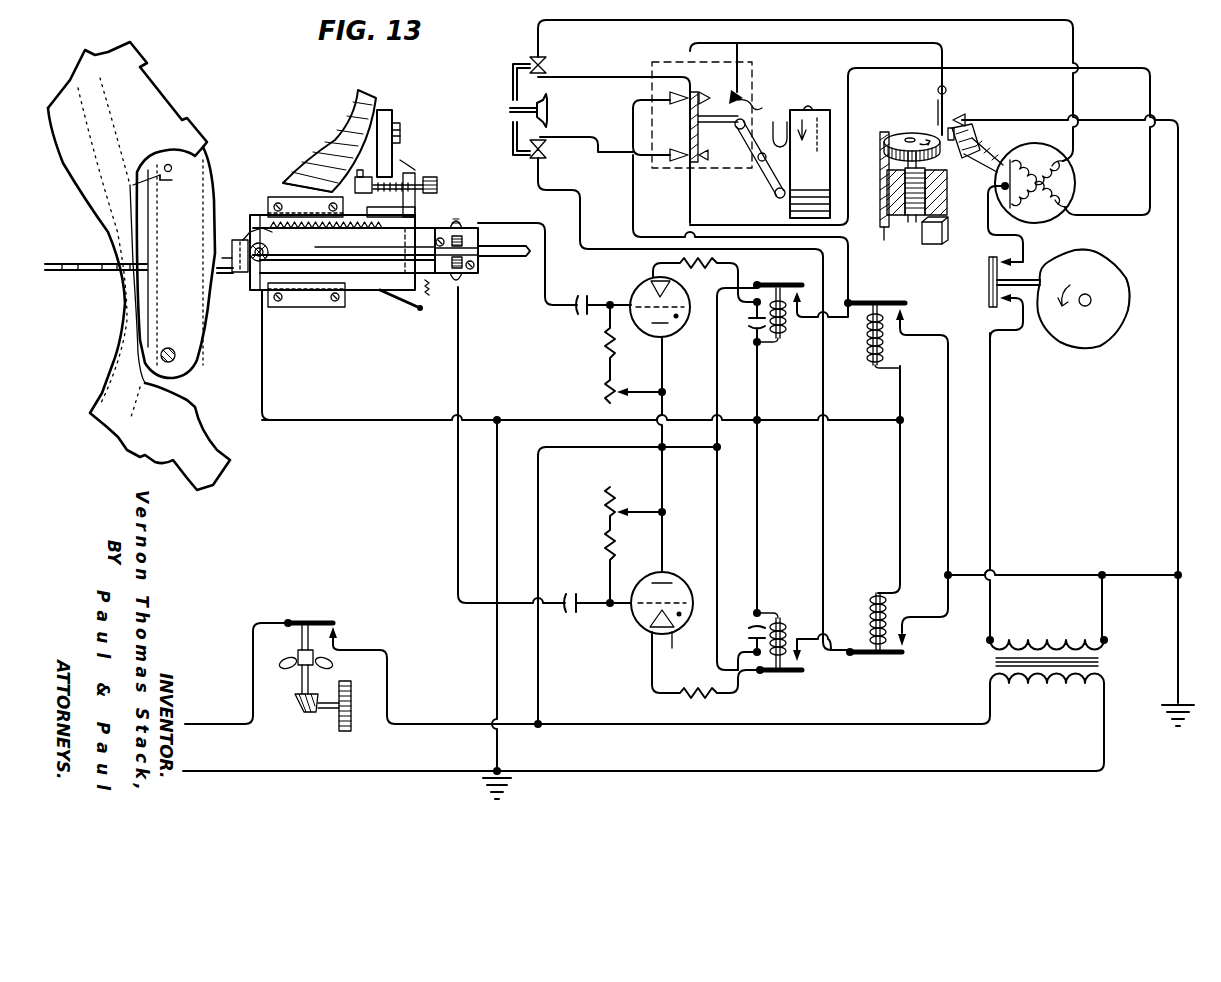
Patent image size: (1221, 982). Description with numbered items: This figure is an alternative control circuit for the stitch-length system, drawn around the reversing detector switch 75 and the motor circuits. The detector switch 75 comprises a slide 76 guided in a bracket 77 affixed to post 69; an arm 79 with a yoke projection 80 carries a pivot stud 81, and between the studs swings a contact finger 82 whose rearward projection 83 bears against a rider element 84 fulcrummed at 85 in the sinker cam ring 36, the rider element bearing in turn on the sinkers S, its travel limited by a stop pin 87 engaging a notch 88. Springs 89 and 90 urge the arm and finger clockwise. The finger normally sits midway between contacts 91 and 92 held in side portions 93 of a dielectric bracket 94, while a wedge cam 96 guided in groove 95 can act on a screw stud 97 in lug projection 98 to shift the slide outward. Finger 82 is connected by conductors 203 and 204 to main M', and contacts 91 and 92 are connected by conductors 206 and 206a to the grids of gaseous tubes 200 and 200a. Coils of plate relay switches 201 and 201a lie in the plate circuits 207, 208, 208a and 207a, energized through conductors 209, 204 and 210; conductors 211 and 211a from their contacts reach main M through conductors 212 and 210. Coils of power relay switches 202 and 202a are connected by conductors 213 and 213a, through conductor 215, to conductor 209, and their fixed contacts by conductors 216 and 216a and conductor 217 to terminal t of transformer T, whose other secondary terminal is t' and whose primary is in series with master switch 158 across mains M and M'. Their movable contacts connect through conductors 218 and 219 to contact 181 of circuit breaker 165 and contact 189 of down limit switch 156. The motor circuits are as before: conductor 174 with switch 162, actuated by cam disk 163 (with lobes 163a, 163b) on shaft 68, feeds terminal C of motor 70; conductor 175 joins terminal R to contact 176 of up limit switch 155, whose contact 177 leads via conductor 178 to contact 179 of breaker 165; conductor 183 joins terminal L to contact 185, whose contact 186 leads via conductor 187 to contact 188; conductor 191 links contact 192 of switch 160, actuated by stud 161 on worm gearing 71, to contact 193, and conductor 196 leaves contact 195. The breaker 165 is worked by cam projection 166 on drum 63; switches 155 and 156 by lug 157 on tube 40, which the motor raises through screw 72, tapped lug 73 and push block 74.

The sinker cam ring 36 is at (100, 402).
The sinkers S is at (82, 262).
The rider element 84 is at (208, 170).
The stop pin 87 is at (168, 164).
The notch 88 is at (166, 182).
The fulcrum 85 is at (169, 347).
The yoke projection 80 is at (230, 251).
The rearward projection 83 is at (233, 276).
The pivot stud 81 is at (242, 232).
The slide 76 is at (362, 296).
The contact finger 82 is at (344, 250).
The spring 90 is at (320, 218).
The member (arm) 79 is at (307, 310).
The guide bracket 77 is at (390, 110).
The post 69 is at (345, 118).
The wedge cam 96 is at (348, 165).
The vertical groove 95 is at (368, 176).
The screw stud 97 is at (438, 184).
The lateral lug projection 98 is at (420, 202).
The reversing detector switch 75 is at (415, 170).
The upstanding side portions 93 is at (438, 226).
The bracket 94 is at (479, 238).
The fixed contact 91 is at (456, 219).
The fixed contact 92 is at (462, 286).
The spring 89 is at (424, 306).
The up limit switch 155 is at (515, 56).
The lug projection 157 is at (510, 110).
The down limit switch 156 is at (505, 160).
The tube 40 is at (548, 110).
The movable contact 176 is at (548, 66).
The stationary contact 177 is at (544, 78).
The fixed contact 188 is at (564, 143).
The movable contact 189 is at (545, 160).
The conductor 187 is at (618, 145).
The conductor 178 is at (620, 76).
The conductor 191 is at (838, 43).
The conductor 175 is at (993, 21).
The circuit breaker 165 is at (692, 54).
The movable contact 179 is at (702, 91).
The fixed contact 181 is at (662, 109).
The stationary contact 186 is at (670, 134).
The movable contact 185 is at (692, 172).
The conductor 183 is at (737, 225).
The movable contact 193 is at (759, 89).
The lateral cam projection 166 is at (780, 120).
The supplemental timing drum 63 is at (818, 108).
The conductor 218 is at (655, 232).
The conductor 219 is at (600, 248).
The movable contact 192 is at (946, 90).
The switch 160 is at (925, 98).
The fixed contact 195 is at (958, 118).
The stud 161 is at (960, 136).
The worm gearing 71 is at (895, 135).
The screw 72 is at (928, 218).
The tapped lateral lug projection 73 is at (885, 240).
The push block 74 is at (940, 245).
The reversible electric motor 70 is at (1077, 178).
The motor terminal R is at (1074, 154).
The motor terminal L is at (1072, 202).
The motor terminal C is at (994, 222).
The switch 162 is at (975, 272).
The supplemental cam disk 163 is at (1058, 332).
The shaft 68 is at (1085, 306).
The cam lobe 163a is at (1090, 250).
The cam lobe 163b is at (1122, 330).
The conductor 174 is at (990, 506).
The conductor 196 is at (1176, 446).
The conductor 206 is at (546, 272).
The gaseous grid-controlled electron tube 200 is at (645, 283).
The cathode plate circuit conductor 207 is at (664, 362).
The conductor 211 is at (712, 389).
The conductor 209 is at (553, 420).
The conductor 215 is at (858, 421).
The conductor 203 is at (320, 418).
The conductor 212 is at (686, 446).
The conductor 210 is at (540, 508).
The conductor 204 is at (494, 514).
The conductor 206a is at (456, 476).
The cathode plate circuit conductor 207a is at (658, 472).
The conductor 211a is at (712, 492).
The gaseous grid-controlled electron tube 200a is at (682, 578).
The plate relay switch 201 is at (776, 282).
The cathode plate circuit conductor 208 is at (760, 386).
The cathode plate circuit conductor 208a is at (760, 516).
The plate relay switch 201a is at (777, 676).
The power relay switch 202 is at (888, 300).
The conductor 213 is at (896, 397).
The conductor 213a is at (896, 495).
The conductor 216 is at (935, 390).
The conductor 216a is at (926, 620).
The power relay switch 202a is at (882, 664).
The conductor 217 is at (1058, 572).
The transformer T is at (980, 637).
The primary terminal t' is at (998, 631).
The secondary terminal t is at (1095, 631).
The master switch 158 is at (345, 606).
The main M is at (236, 673).
The main M' is at (639, 759).